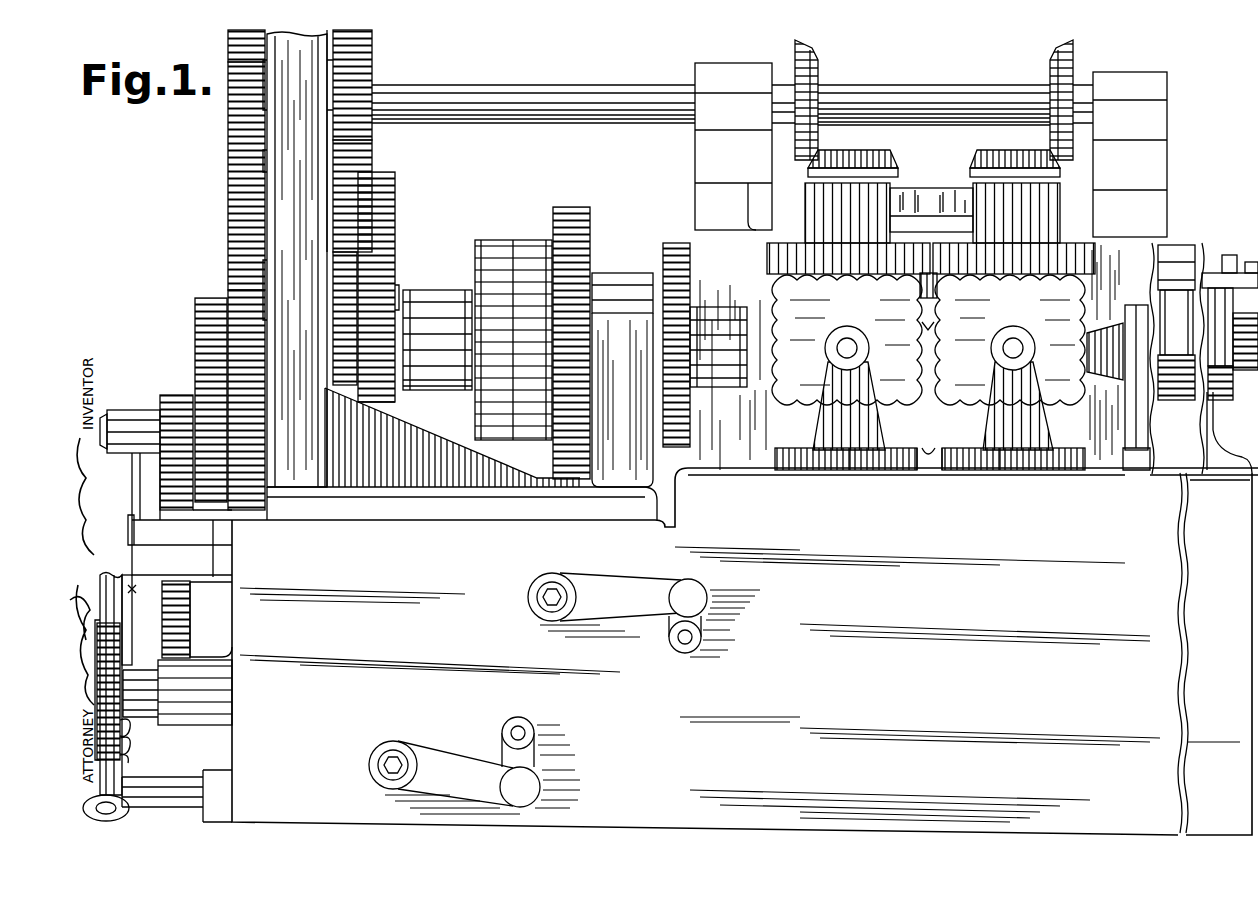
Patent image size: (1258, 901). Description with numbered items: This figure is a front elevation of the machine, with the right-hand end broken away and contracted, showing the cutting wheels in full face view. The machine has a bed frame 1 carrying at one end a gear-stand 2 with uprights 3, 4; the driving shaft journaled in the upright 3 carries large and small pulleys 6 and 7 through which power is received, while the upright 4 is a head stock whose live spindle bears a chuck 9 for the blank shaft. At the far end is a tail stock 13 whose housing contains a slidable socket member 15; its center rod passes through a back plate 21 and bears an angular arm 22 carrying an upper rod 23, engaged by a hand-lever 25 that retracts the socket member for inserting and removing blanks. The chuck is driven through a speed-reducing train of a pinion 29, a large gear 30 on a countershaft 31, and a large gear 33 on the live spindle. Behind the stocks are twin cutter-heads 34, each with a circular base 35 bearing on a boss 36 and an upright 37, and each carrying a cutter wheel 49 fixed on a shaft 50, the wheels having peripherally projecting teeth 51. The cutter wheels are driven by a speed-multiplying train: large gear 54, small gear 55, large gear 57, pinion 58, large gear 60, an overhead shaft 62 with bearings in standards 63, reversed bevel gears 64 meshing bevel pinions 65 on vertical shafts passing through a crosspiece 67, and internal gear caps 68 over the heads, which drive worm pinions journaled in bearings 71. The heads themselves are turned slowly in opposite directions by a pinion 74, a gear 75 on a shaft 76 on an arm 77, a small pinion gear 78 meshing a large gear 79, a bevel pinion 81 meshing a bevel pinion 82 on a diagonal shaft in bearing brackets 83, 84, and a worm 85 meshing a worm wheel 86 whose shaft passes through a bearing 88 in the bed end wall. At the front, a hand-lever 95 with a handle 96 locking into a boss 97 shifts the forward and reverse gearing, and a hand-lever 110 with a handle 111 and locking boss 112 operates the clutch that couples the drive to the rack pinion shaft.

The bed frame 1 is at (518, 534).
The gear-stand 2 is at (455, 506).
The upright 3 is at (285, 232).
The upright 4 is at (622, 315).
The large pulley 6 is at (518, 240).
The small pulley 7 is at (433, 290).
The chuck 9 is at (705, 330).
The tail stock 13 is at (1213, 443).
The socket member 15 is at (1108, 378).
The back plate 21 is at (1215, 405).
The angular arm 22 is at (1233, 371).
The upper rod 23 is at (1237, 258).
The hand-lever 25 is at (1211, 279).
The pinion 29 is at (394, 380).
The large gear 30 is at (396, 208).
The countershaft 31 is at (400, 297).
The large gear 33 is at (578, 207).
The cutter-head 34 is at (978, 425).
The circular base 35 is at (935, 468).
The boss 36 is at (780, 471).
The upright 37 is at (850, 447).
The cutter wheel 49 is at (902, 372).
The cutter shaft 50 is at (845, 360).
The teeth 51 is at (930, 312).
The large gear 54 is at (228, 275).
The small gear 55 is at (228, 153).
The large gear 57 is at (365, 147).
The pinion 58 is at (372, 45).
The large gear 60 is at (228, 54).
The shaft 62 is at (493, 86).
The standard 63 is at (697, 70).
The bevel gear 64 is at (814, 62).
The bevel pinion 65 is at (880, 158).
The crosspiece 67 is at (927, 197).
The internal gear cap 68 is at (771, 245).
The bearing 71 is at (928, 285).
The pinion 74 is at (195, 320).
The gear 75 is at (215, 500).
The shaft 76 is at (108, 446).
The arm 77 is at (137, 488).
The small pinion gear 78 is at (172, 396).
The large gear 79 is at (196, 628).
The bevel pinion 81 is at (130, 525).
The bevel pinion 82 is at (133, 592).
The bearing bracket 83 is at (98, 578).
The bearing bracket 84 is at (130, 784).
The worm 85 is at (131, 745).
The worm wheel 86 is at (125, 640).
The bearing 88 is at (205, 726).
The hand-lever 95 is at (460, 768).
The handle 96 is at (530, 790).
The boss 97 is at (536, 745).
The hand-lever 110 is at (626, 586).
The handle 111 is at (703, 592).
The locking boss 112 is at (703, 637).